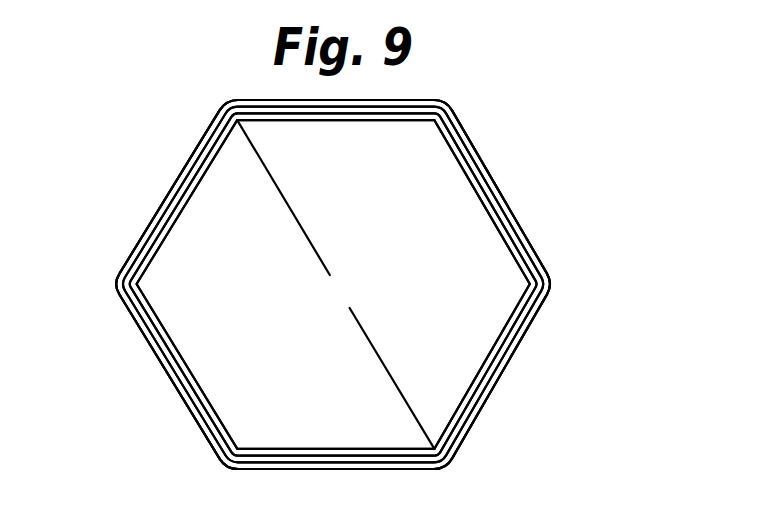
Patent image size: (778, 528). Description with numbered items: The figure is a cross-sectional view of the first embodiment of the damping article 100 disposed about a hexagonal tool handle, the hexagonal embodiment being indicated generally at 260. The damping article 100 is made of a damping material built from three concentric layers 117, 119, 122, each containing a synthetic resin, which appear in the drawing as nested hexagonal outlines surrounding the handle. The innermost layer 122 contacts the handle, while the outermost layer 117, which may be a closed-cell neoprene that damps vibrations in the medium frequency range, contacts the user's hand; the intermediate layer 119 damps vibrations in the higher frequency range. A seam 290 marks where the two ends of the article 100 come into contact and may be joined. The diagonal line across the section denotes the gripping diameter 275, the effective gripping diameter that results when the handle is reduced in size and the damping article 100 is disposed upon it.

The damping article 100 is at (531, 238).
The layer 117 is at (547, 262).
The layer 119 is at (545, 289).
The layer 122 is at (545, 294).
The hexagonal embodiment 260 is at (440, 134).
The seam 290 is at (470, 187).
The gripping diameter 275 is at (335, 284).